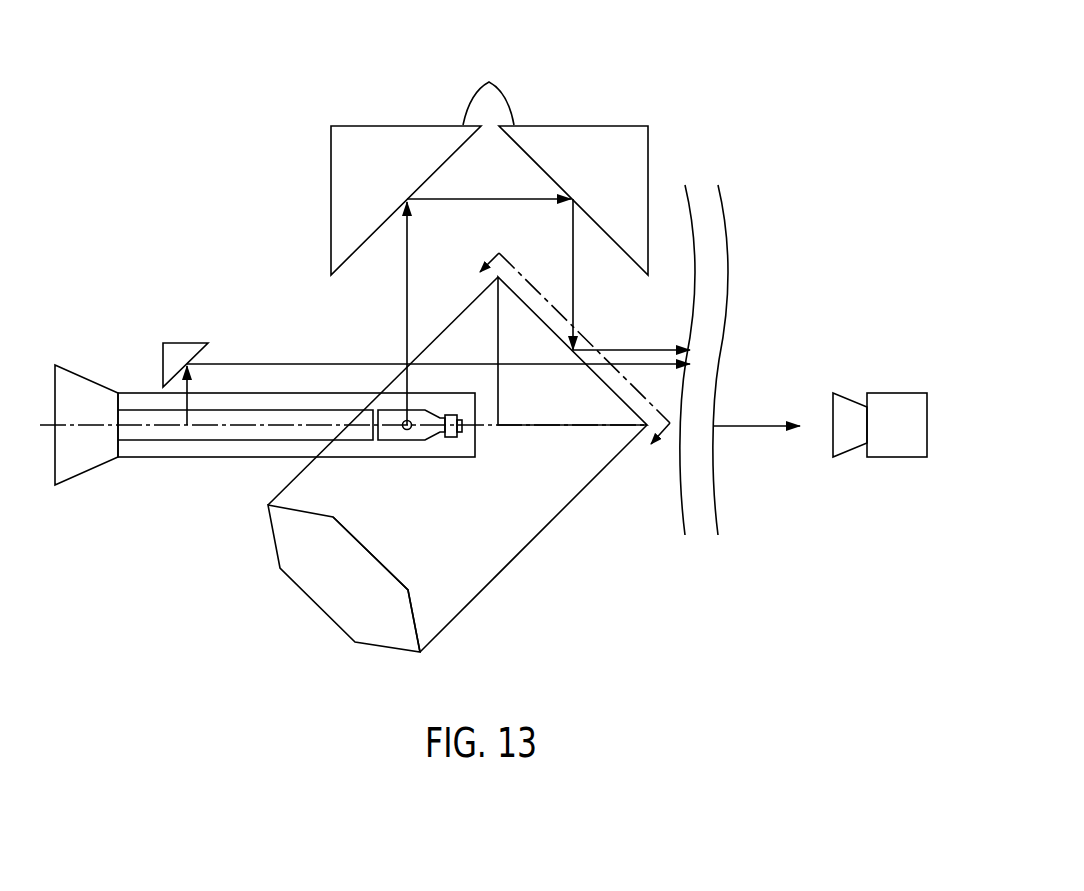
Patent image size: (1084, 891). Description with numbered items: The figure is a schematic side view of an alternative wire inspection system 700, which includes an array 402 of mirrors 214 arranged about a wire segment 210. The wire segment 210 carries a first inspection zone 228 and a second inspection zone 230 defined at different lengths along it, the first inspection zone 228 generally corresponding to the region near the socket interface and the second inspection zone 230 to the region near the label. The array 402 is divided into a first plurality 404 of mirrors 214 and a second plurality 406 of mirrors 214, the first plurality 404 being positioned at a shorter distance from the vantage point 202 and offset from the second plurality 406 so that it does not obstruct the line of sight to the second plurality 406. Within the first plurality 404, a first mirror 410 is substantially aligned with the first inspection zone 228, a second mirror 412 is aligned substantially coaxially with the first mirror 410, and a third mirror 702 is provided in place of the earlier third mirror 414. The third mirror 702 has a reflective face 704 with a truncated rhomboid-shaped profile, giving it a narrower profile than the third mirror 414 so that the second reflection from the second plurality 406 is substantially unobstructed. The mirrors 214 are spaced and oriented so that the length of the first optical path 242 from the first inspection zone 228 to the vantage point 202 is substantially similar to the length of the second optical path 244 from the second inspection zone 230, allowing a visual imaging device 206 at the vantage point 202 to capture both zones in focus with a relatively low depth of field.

The array 402 is at (205, 120).
The first plurality 404 is at (494, 144).
The second plurality 406 is at (218, 290).
The first mirror 410 is at (351, 125).
The second mirror 412 is at (593, 125).
The third mirror 414 is at (497, 322).
The mirrors 214 is at (187, 343).
The first optical path 242 is at (407, 242).
The second optical path 244 is at (278, 364).
The wire segment 210 is at (270, 410).
The second inspection zone 230 is at (162, 447).
The first inspection zone 228 is at (405, 449).
The third mirror 702 is at (277, 548).
The reflective face 704 is at (330, 595).
The wire inspection system 700 is at (748, 135).
The vantage point 202 is at (898, 408).
The visual imaging device 206 is at (897, 457).